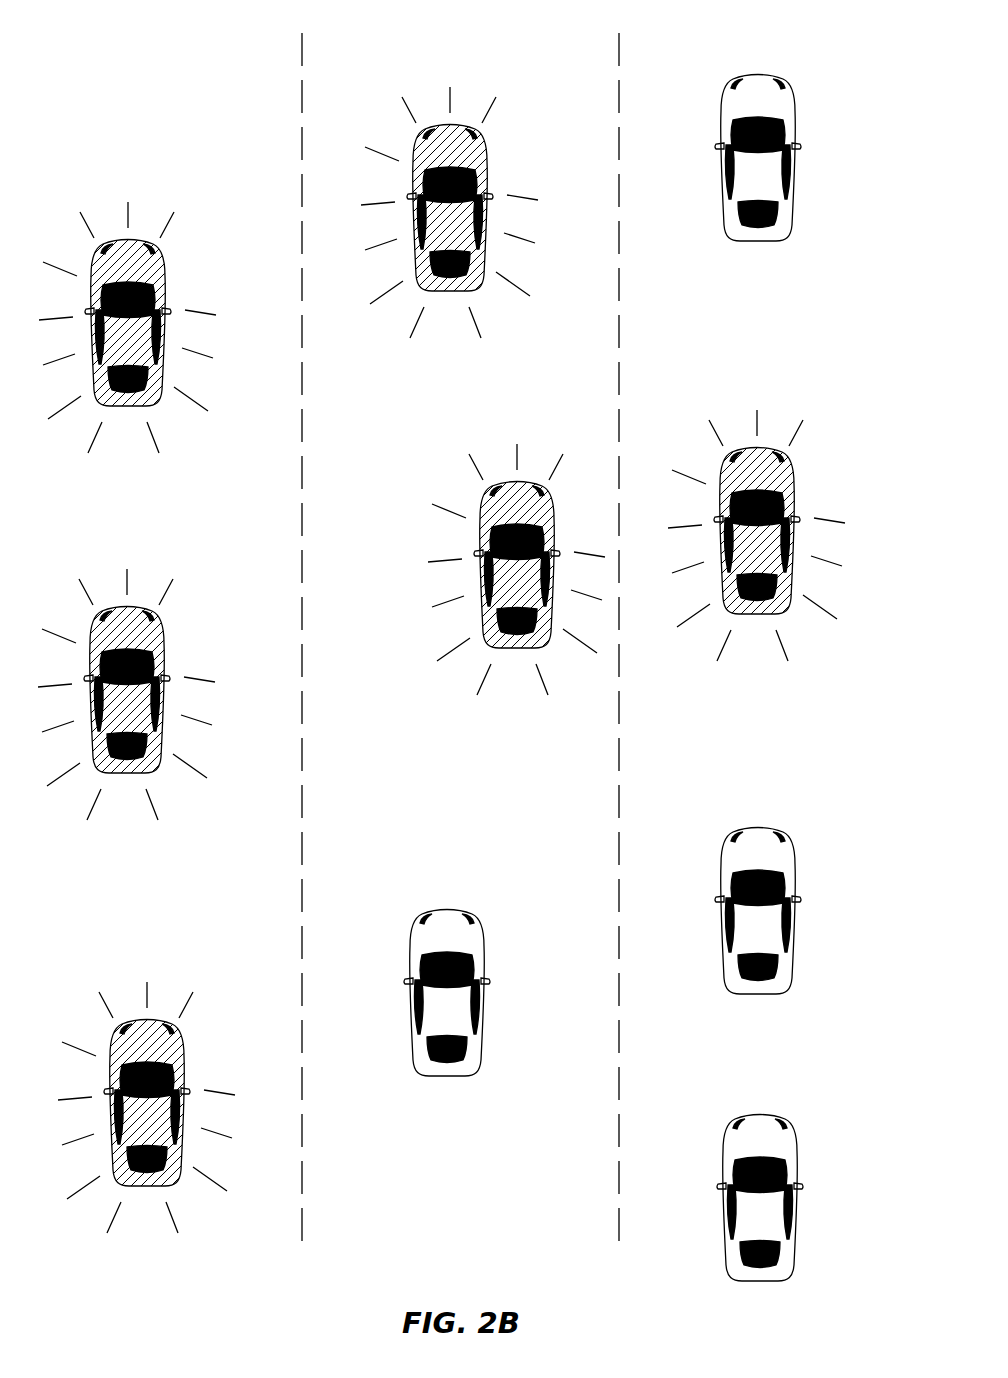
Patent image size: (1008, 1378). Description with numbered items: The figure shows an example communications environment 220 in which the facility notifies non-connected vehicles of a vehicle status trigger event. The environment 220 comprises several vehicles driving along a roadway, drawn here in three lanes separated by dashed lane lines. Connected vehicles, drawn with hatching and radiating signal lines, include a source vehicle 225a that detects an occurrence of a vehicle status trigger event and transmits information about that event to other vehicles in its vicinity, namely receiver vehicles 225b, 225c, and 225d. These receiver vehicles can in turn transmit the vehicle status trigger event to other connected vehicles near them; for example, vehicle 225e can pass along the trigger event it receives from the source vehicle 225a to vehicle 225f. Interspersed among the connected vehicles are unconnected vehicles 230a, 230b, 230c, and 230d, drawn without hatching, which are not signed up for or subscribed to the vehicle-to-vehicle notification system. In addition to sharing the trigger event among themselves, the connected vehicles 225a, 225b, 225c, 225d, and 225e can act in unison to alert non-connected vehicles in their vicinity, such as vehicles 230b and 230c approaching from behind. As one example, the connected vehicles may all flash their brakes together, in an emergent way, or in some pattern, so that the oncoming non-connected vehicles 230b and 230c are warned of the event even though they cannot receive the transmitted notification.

The communications environment 220 is at (136, 88).
The source vehicle 225a is at (533, 152).
The receiver vehicle 225b is at (602, 507).
The receiver vehicle 225c is at (838, 473).
The receiver vehicle 225d is at (210, 265).
The connected vehicle 225e is at (207, 632).
The connected vehicle 225f is at (230, 1045).
The unconnected vehicle 230a is at (838, 102).
The non-connected vehicle 230b is at (528, 937).
The non-connected vehicle 230c is at (838, 855).
The unconnected vehicle 230d is at (842, 1142).